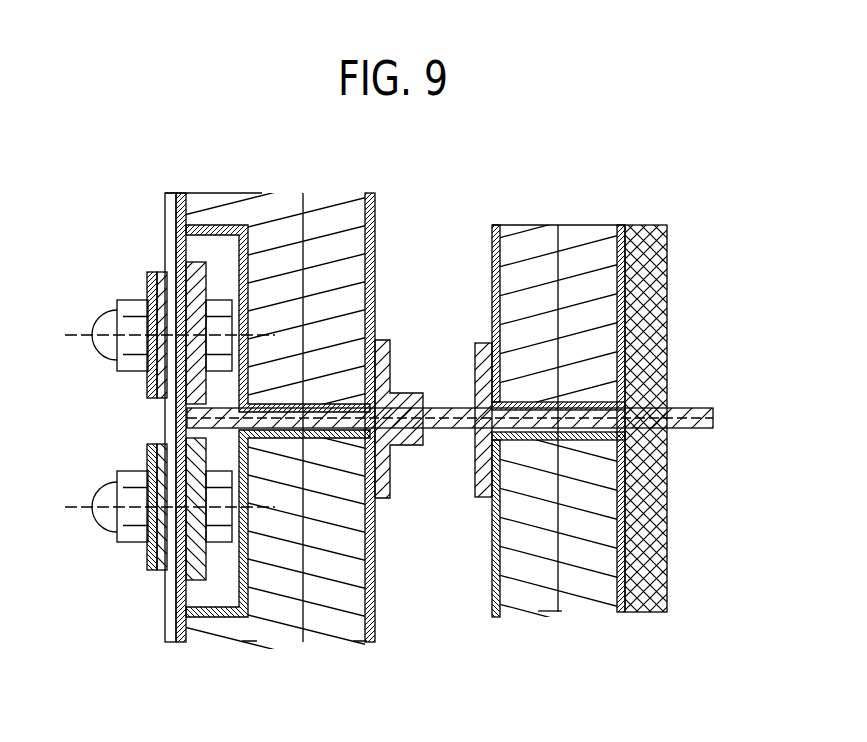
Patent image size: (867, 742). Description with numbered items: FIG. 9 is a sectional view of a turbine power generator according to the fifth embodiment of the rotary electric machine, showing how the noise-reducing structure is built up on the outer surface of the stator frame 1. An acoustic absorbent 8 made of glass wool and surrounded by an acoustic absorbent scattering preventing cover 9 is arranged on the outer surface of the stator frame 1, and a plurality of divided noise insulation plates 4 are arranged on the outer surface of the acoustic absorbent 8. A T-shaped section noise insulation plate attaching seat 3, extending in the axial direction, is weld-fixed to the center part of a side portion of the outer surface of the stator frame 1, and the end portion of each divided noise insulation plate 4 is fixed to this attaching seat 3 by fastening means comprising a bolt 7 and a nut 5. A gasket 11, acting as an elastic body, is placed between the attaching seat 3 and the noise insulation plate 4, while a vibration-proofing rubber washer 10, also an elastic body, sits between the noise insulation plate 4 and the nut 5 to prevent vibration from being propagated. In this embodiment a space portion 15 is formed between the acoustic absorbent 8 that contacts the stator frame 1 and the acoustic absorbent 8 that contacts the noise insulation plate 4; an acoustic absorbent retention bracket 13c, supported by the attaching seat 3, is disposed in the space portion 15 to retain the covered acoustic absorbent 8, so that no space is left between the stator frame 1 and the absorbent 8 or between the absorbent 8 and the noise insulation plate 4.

The stator frame 1 is at (650, 540).
The noise insulation plate attaching seat 3 is at (187, 427).
The noise insulation plate 4 is at (172, 618).
The nut 5 is at (127, 493).
The bolt 7 is at (215, 617).
The acoustic absorbent 8 is at (333, 610).
The acoustic absorbent scattering preventing cover 9 is at (370, 193).
The vibration-proofing rubber washer 10 is at (147, 457).
The gasket 11 is at (165, 580).
The acoustic absorbent retention bracket 13c is at (481, 343).
The space portion 15 is at (443, 495).